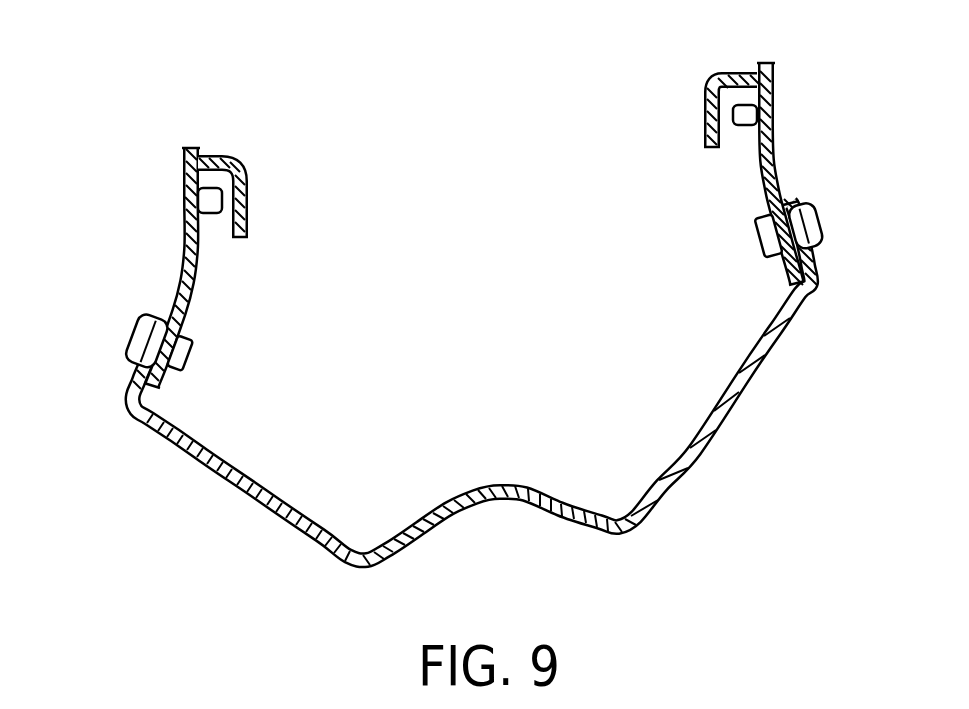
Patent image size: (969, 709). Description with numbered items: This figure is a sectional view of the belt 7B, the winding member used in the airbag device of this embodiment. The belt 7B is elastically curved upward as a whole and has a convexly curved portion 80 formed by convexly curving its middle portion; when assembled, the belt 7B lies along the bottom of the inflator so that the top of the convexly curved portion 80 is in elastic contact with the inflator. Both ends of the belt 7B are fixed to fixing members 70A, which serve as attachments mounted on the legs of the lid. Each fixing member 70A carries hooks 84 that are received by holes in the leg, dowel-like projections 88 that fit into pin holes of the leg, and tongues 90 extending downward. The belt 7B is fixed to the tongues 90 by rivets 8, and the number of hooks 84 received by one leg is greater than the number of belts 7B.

The belt 7B is at (726, 424).
The rivet 8 is at (130, 342).
The fixing member 70A is at (181, 149).
The convexly curved portion 80 is at (495, 475).
The hook 84 is at (229, 158).
The dowel-like projection 88 is at (207, 203).
The tongue 90 is at (191, 302).